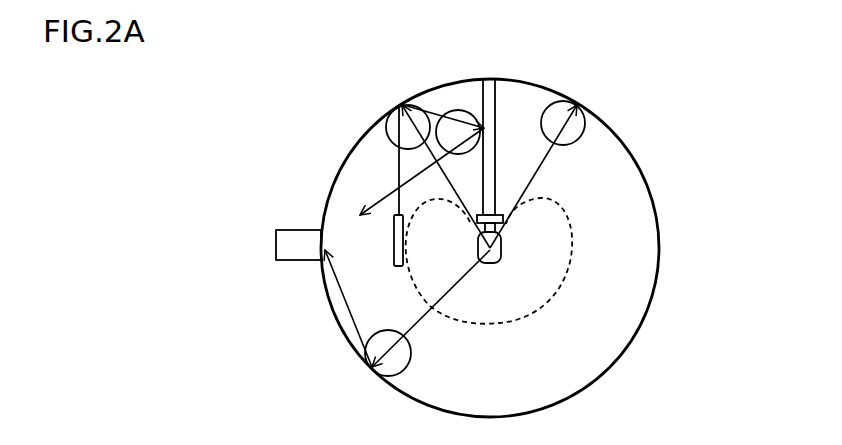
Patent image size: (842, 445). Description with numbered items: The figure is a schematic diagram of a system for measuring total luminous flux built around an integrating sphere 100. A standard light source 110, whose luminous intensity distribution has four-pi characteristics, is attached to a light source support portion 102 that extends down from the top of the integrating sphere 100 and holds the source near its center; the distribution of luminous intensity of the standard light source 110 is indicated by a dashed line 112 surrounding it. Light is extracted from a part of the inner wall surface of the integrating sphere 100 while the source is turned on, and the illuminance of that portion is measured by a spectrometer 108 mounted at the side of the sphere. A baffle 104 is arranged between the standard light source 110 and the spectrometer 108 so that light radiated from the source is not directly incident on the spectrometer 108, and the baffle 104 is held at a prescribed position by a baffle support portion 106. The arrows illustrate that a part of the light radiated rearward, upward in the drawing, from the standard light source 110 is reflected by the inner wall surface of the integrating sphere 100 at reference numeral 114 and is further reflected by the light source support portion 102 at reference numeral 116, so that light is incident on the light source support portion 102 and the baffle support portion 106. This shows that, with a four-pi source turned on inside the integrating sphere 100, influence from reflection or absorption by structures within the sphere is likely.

The integrating sphere 100 is at (658, 253).
The light source support portion 102 is at (498, 95).
The baffle 104 is at (393, 233).
The baffle support portion 106 is at (397, 160).
The spectrometer 108 is at (297, 250).
The standard light source 110 is at (493, 263).
The dashed line (distribution of luminous intensity) 112 is at (560, 202).
The reflection by the inner wall surface 114 is at (387, 132).
The reflection by the light source support portion 116 is at (460, 108).